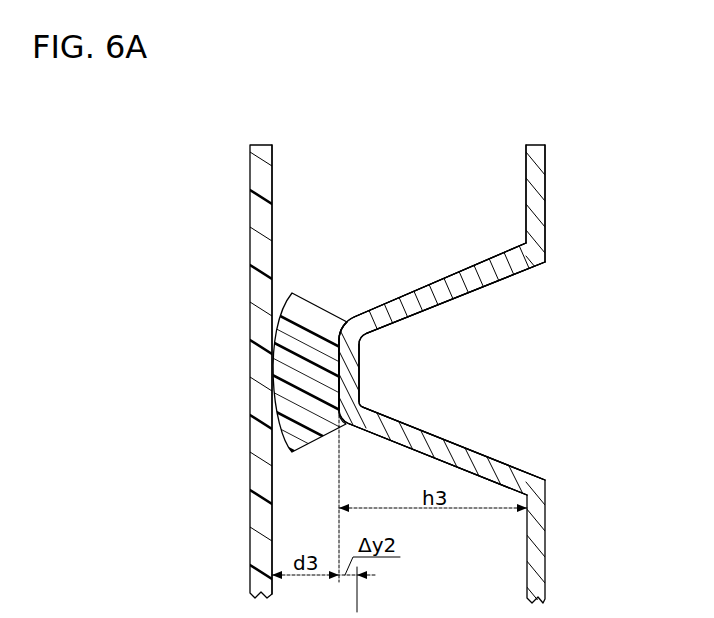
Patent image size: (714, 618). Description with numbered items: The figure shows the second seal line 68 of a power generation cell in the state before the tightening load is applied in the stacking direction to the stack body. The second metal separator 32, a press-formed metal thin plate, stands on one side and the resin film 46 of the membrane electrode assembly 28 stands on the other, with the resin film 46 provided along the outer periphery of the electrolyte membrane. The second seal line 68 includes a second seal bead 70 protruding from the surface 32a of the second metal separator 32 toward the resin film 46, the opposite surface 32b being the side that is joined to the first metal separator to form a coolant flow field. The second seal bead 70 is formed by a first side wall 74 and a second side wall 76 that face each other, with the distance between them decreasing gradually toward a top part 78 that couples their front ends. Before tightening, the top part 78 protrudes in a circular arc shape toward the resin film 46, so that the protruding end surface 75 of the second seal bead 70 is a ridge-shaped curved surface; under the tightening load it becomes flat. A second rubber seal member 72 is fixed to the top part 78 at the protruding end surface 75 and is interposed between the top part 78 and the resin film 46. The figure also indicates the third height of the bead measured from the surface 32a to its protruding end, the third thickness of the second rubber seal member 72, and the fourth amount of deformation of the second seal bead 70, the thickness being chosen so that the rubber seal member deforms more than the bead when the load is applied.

The membrane electrode assembly 28 is at (262, 138).
The resin film 46 is at (267, 170).
The second metal separator 32 is at (536, 138).
The surface of the second metal separator 32a is at (525, 168).
The surface of the second metal separator 32b is at (546, 168).
The second seal line 68 is at (375, 229).
The second rubber seal member 72 is at (311, 312).
The second seal bead 70 is at (381, 300).
The first side wall 74 is at (440, 287).
The second side wall 76 is at (453, 452).
The top part 78 is at (353, 370).
The protruding end surface 75 is at (337, 375).